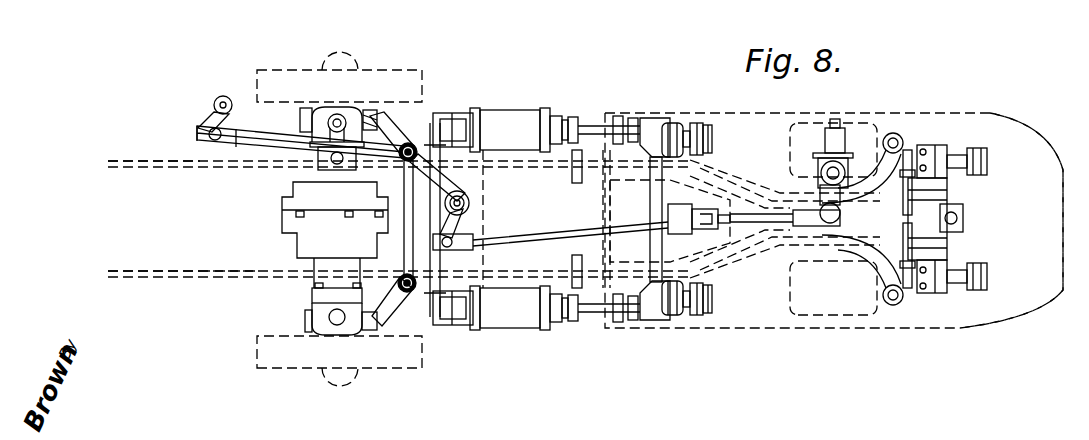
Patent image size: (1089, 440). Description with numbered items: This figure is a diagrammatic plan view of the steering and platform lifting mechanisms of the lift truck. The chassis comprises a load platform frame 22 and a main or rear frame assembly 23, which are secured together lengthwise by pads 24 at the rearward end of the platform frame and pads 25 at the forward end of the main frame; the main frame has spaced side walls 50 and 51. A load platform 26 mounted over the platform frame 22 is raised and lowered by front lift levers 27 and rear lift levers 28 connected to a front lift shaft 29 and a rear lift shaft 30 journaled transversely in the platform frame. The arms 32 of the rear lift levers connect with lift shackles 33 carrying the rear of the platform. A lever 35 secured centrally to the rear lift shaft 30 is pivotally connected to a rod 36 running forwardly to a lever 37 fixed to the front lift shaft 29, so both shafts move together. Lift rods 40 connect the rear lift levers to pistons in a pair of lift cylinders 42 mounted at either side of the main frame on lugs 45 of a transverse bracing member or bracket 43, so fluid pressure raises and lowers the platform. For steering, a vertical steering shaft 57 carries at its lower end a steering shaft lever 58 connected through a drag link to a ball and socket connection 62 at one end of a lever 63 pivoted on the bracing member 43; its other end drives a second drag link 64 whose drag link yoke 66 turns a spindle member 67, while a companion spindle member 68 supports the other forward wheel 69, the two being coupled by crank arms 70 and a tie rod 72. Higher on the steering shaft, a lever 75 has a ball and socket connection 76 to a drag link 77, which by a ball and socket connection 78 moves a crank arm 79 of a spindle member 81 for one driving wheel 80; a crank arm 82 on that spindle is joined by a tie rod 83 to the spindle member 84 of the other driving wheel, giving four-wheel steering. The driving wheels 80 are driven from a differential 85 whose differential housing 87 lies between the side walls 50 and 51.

The load platform frame 22 is at (742, 258).
The main or rear frame assembly 23 is at (204, 263).
The pads 24 is at (572, 179).
The pads 25 is at (574, 235).
The load platform 26 is at (1016, 312).
The front lift levers 27 is at (957, 158).
The rear lift levers 28 is at (648, 120).
The front lift shaft 29 is at (940, 192).
The rear lift shaft 30 is at (656, 196).
The arms 32 is at (694, 124).
The lift shackles 33 is at (710, 127).
The lever 35 is at (668, 218).
The rod 36 is at (742, 210).
The lever 37 is at (965, 220).
The lift rods 40 is at (585, 124).
The lift cylinders 42 is at (487, 112).
The bracing member or bracket 43 is at (470, 202).
The lugs 45 is at (445, 118).
The side wall 50 is at (140, 158).
The side wall 51 is at (150, 271).
The steering shaft 57 is at (223, 96).
The steering shaft lever 58 is at (197, 141).
The ball and socket connection 62 is at (415, 150).
The lever 63 is at (463, 190).
The second drag link 64 is at (512, 237).
The drag link yoke 66 is at (822, 216).
The spindle member 67 is at (828, 130).
The spindle member 68 is at (795, 264).
The forward wheels 69 is at (850, 120).
The crank arms 70 is at (889, 132).
The tie rod 72 is at (948, 206).
The lever 75 is at (212, 113).
The ball and socket connection 76 is at (200, 128).
The drag link 77 is at (258, 138).
The ball and socket connection 78 is at (315, 160).
The crank arm 79 is at (312, 134).
The driving wheels 80 is at (355, 72).
The spindle member 81 is at (302, 108).
The crank arm 82 is at (388, 120).
The tie rod 83 is at (404, 258).
The spindle member 84 is at (305, 320).
The differential 85 is at (290, 245).
The differential housing 87 is at (282, 202).